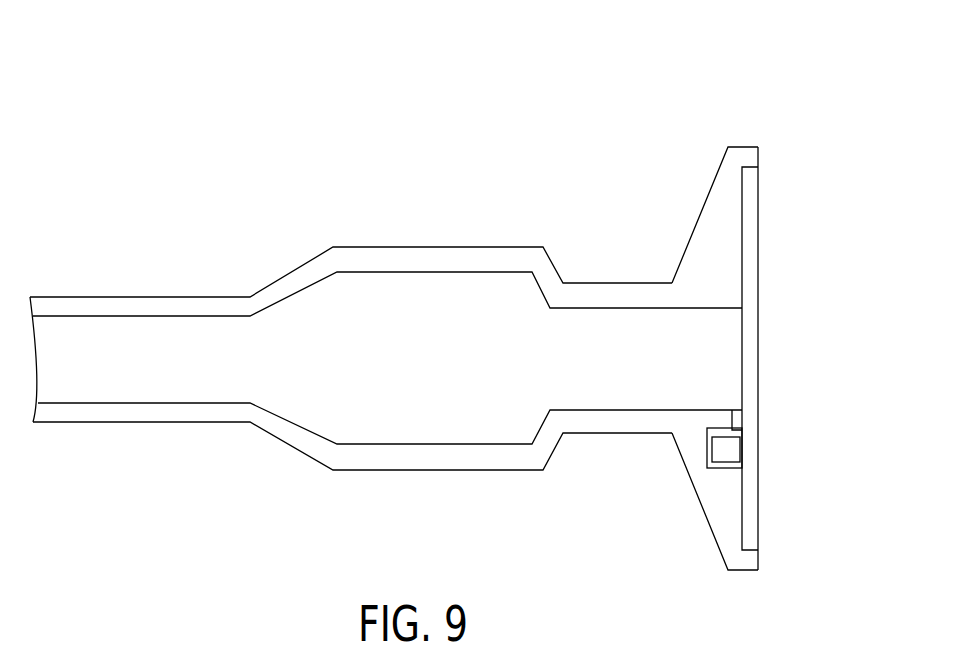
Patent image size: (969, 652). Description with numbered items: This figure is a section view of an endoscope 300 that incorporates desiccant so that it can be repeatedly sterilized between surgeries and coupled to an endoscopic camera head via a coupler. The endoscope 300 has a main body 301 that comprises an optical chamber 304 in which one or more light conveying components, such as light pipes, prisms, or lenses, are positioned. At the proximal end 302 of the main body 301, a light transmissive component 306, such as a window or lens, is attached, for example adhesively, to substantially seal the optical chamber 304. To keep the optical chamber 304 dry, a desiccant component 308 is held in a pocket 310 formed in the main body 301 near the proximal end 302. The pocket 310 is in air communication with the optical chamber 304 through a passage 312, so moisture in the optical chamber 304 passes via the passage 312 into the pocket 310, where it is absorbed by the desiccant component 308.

The endoscope 300 is at (797, 100).
The main body 301 is at (487, 250).
The proximal end 302 is at (712, 217).
The optical chamber 304 is at (586, 376).
The light transmissive component 306 is at (750, 235).
The desiccant component 308 is at (732, 450).
The pocket 310 is at (737, 467).
The passage 312 is at (735, 420).